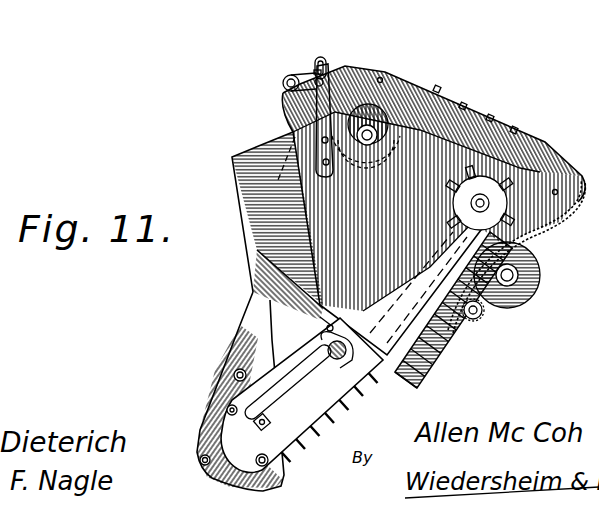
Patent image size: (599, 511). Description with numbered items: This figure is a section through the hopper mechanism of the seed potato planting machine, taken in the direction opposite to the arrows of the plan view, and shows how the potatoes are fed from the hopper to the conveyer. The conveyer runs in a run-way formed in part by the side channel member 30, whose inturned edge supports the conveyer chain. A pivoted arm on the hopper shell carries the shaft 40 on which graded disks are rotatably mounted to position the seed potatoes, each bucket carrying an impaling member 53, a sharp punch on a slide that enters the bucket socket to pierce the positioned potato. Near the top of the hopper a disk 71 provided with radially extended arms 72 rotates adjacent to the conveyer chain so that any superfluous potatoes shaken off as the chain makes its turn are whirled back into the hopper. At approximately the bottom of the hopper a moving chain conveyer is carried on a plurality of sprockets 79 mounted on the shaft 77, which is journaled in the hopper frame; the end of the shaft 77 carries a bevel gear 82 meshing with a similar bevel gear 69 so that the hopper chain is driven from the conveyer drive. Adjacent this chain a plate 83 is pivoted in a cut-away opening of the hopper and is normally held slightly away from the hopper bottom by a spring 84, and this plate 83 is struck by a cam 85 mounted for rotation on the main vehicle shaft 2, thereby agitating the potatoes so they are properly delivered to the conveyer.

The main vehicle shaft 2 is at (334, 364).
The side channel member 30 is at (233, 333).
The shaft 40 is at (553, 263).
The impaling member 53 is at (392, 112).
The bevel gear 69 is at (482, 318).
The disk 71 is at (462, 238).
The radially extended arms 72 is at (452, 206).
The shaft 77 is at (401, 380).
The sprockets 79 is at (429, 355).
The bevel gear 82 is at (466, 332).
The plate 83 is at (325, 324).
The spring 84 is at (368, 386).
The cam 85 is at (328, 348).